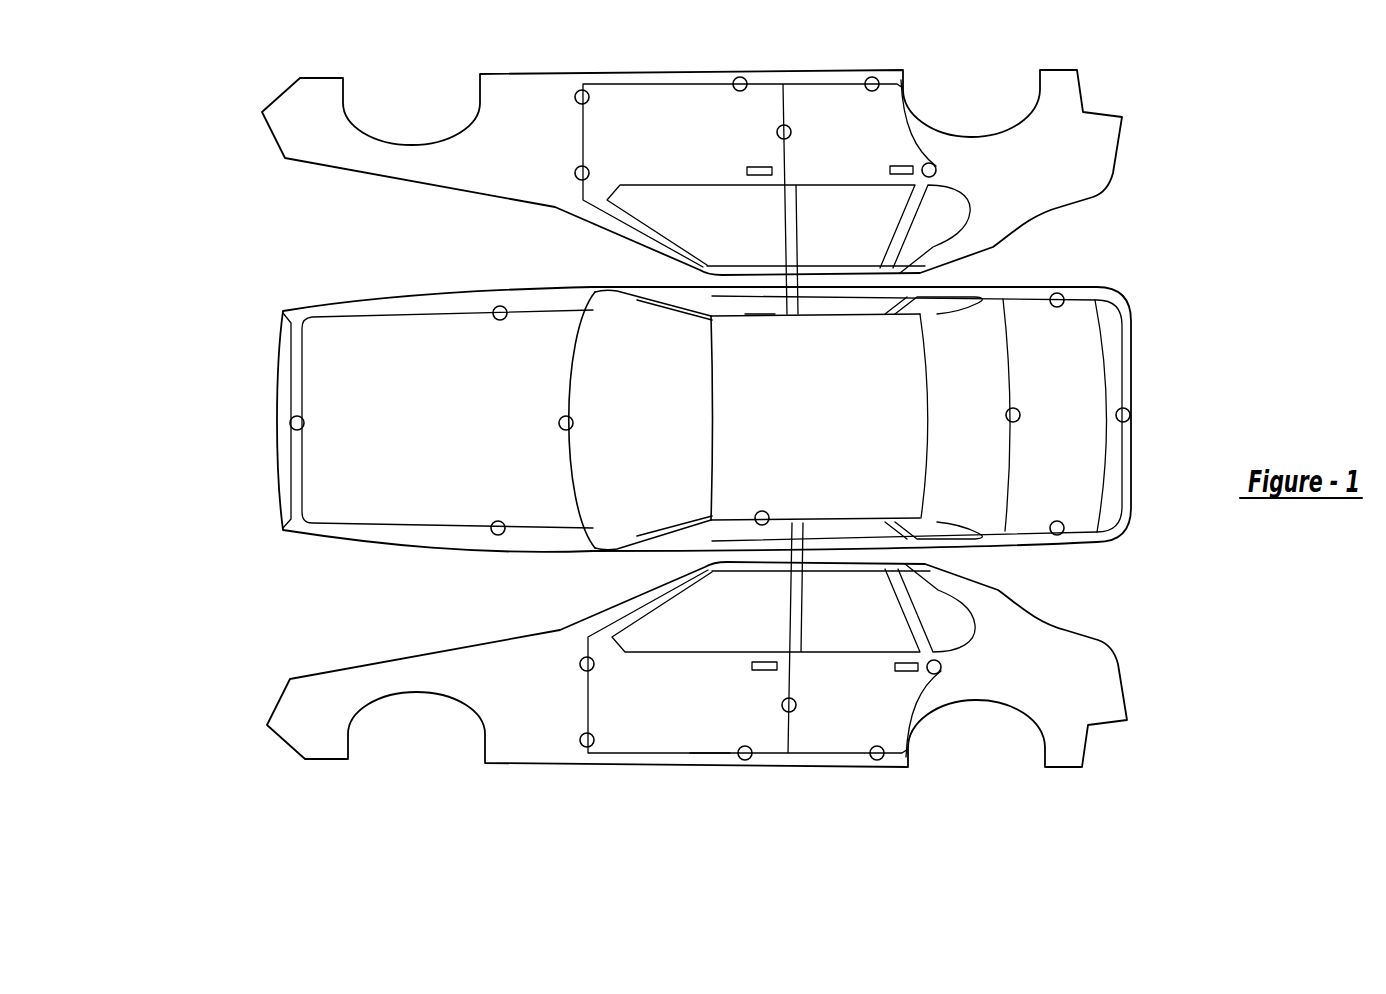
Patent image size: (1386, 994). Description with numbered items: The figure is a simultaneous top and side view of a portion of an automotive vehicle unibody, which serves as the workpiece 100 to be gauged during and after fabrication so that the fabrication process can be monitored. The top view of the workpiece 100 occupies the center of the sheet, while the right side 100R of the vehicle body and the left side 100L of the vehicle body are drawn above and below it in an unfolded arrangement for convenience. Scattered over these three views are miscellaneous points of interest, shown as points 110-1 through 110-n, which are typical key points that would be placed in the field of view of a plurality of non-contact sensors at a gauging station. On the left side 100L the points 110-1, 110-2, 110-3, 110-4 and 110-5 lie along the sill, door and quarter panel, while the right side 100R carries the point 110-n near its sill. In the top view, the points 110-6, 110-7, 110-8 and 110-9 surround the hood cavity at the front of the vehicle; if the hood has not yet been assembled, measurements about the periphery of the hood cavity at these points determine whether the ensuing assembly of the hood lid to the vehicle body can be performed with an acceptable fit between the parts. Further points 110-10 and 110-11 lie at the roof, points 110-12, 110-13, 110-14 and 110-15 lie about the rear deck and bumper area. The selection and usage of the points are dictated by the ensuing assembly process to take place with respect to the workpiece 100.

The workpiece 100 is at (271, 274).
The right side of the vehicle body 100R is at (258, 199).
The left side of the vehicle body 100L is at (256, 633).
The point of interest 110-1 is at (593, 667).
The point of interest 110-2 is at (580, 738).
The point of interest 110-3 is at (700, 768).
The point of interest 110-4 is at (796, 708).
The point of interest 110-5 is at (879, 760).
The point of interest 110-6 is at (497, 520).
The point of interest 110-7 is at (305, 423).
The point of interest 110-8 is at (448, 315).
The point of interest 110-9 is at (572, 418).
The point of interest 110-10 is at (760, 317).
The point of interest 110-11 is at (766, 513).
The point of interest 110-12 is at (1020, 416).
The point of interest 110-13 is at (1062, 535).
The point of interest 110-14 is at (1130, 415).
The point of interest 110-15 is at (1057, 293).
The point of interest 110-n is at (872, 77).